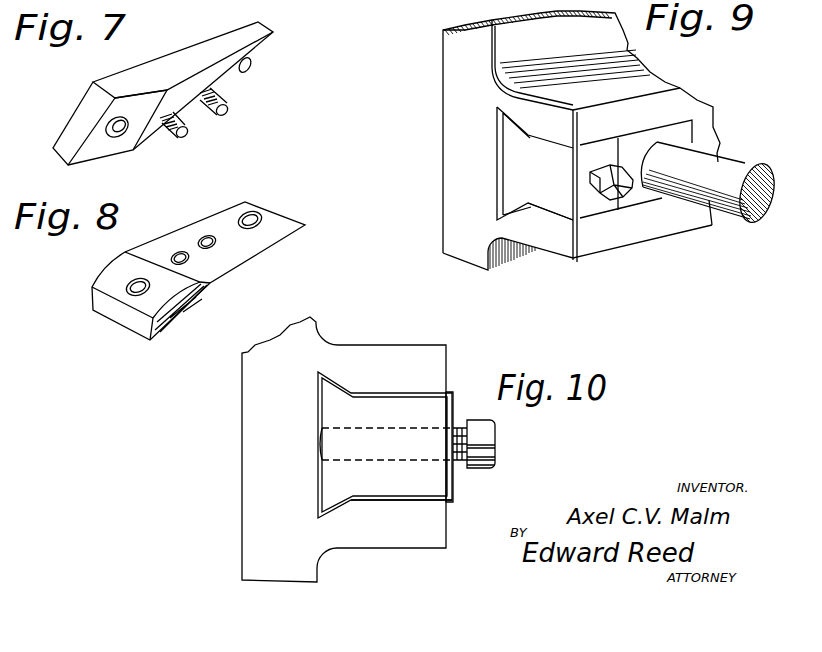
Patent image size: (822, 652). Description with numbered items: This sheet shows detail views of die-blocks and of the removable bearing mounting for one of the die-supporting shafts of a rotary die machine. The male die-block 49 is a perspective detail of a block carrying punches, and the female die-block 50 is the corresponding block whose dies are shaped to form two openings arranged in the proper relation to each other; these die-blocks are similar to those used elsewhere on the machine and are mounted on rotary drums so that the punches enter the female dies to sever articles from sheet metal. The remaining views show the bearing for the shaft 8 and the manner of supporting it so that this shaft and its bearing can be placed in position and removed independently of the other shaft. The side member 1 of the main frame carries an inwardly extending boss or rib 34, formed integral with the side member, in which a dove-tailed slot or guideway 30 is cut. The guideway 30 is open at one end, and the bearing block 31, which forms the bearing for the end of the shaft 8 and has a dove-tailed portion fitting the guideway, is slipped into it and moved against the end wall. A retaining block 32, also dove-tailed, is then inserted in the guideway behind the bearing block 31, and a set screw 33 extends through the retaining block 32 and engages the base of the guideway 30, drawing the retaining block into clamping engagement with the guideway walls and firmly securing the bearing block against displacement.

In FIG. 9, the side member 1 is at (450, 110).
In FIG. 10, the side member 1 is at (252, 453).
In FIG. 9, the shaft 8 is at (742, 222).
In FIG. 9, the dove-tailed slot 30 is at (553, 213).
In FIG. 10, the dove-tailed slot 30 is at (384, 497).
In FIG. 9, the bearing block 31 is at (642, 196).
In FIG. 9, the retaining block 32 is at (510, 155).
In FIG. 10, the retaining block 32 is at (328, 478).
In FIG. 9, the set screw 33 is at (624, 193).
In FIG. 10, the set screw 33 is at (482, 470).
In FIG. 9, the boss 34 is at (555, 118).
In FIG. 10, the boss 34 is at (345, 363).
In FIG. 7, the male die-block 49 is at (222, 82).
In FIG. 8, the female die-block 50 is at (204, 223).